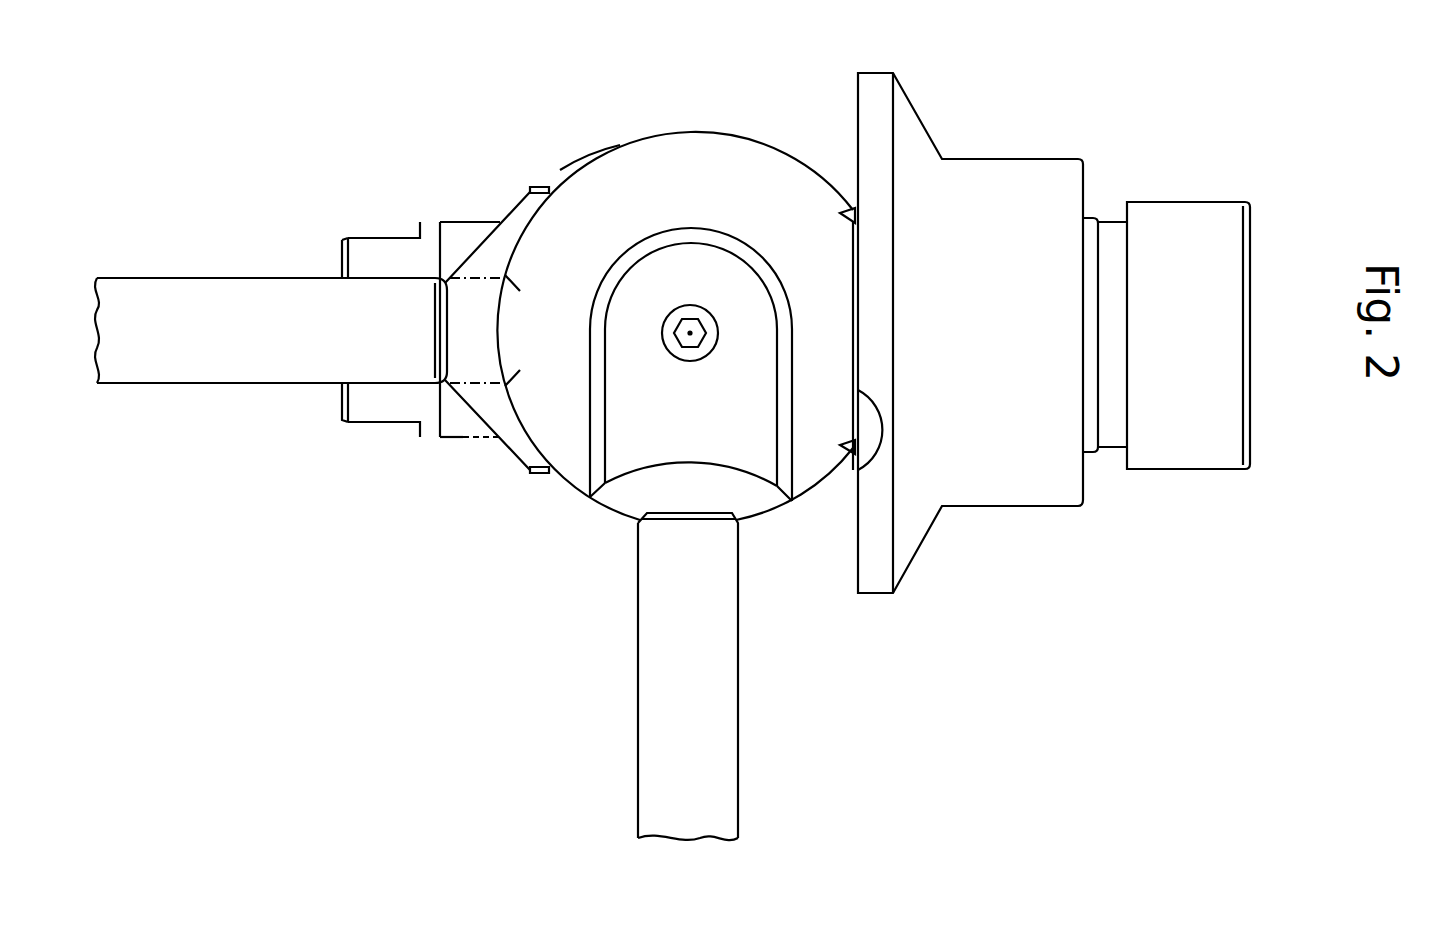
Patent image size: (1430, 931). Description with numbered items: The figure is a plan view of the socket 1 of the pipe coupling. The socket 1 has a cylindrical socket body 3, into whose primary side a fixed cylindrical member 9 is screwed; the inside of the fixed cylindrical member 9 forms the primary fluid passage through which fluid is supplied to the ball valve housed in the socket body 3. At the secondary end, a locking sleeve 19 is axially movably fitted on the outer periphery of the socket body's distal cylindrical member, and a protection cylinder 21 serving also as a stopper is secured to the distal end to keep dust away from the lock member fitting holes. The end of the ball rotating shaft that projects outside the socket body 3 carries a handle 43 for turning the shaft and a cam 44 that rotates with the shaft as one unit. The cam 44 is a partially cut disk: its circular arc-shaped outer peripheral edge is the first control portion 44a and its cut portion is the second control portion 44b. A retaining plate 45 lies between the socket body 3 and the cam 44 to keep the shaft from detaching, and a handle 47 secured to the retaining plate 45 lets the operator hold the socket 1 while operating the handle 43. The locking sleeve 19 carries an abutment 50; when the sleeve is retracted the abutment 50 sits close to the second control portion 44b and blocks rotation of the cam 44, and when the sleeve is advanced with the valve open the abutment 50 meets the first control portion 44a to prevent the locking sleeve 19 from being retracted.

The socket 1 is at (491, 190).
The socket body 3 is at (456, 220).
The fixed cylindrical member 9 is at (370, 250).
The locking sleeve 19 is at (1112, 228).
The protection cylinder 21 is at (1190, 228).
The handle 43 is at (653, 685).
The cam 44 is at (695, 130).
The first control portion 44a is at (590, 158).
The second control portion 44b is at (858, 470).
The retaining plate 45 is at (500, 408).
The handle 47 is at (173, 292).
The abutment 50 is at (910, 125).